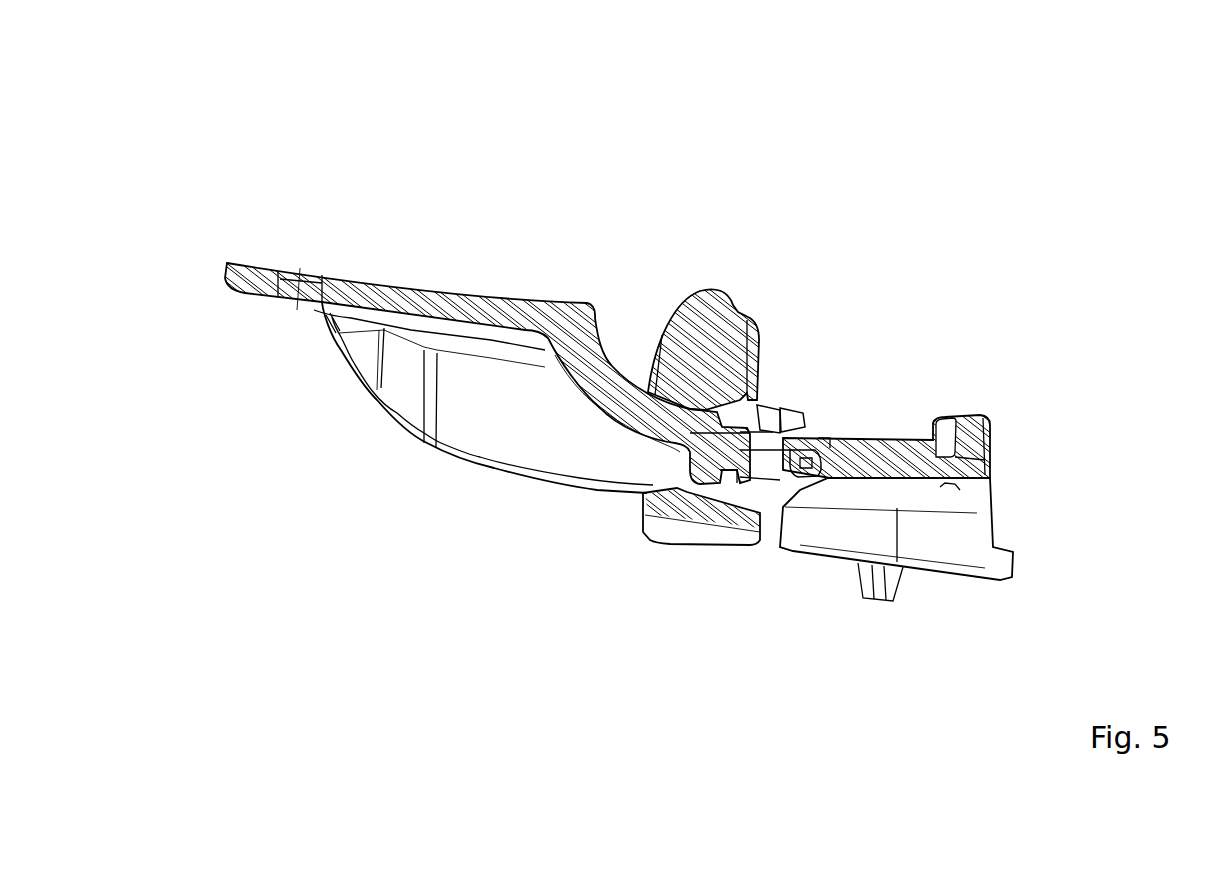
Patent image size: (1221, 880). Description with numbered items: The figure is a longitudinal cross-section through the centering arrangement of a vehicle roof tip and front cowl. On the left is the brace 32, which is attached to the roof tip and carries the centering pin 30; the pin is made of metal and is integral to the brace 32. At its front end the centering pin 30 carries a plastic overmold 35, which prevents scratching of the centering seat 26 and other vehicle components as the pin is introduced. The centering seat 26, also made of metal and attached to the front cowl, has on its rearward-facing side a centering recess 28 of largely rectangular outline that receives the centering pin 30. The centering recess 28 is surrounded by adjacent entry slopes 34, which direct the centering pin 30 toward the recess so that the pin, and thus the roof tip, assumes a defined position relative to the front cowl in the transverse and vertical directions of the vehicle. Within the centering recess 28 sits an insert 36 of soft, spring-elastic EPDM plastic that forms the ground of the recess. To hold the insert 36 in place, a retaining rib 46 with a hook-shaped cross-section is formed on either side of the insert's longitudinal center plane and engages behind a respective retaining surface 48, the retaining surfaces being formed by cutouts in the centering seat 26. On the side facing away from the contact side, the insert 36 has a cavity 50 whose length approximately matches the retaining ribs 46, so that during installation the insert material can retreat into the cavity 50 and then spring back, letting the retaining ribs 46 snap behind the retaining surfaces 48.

The centering seat 26 is at (903, 470).
The centering recess 28 is at (755, 425).
The centering pin 30 is at (712, 457).
The brace 32 is at (440, 301).
The entry slopes 34 is at (697, 357).
The plastic overmold 35 is at (736, 478).
The insert 36 is at (782, 435).
The retaining rib 46 is at (810, 442).
The retaining surface 48 is at (798, 447).
The cavity 50 is at (826, 438).